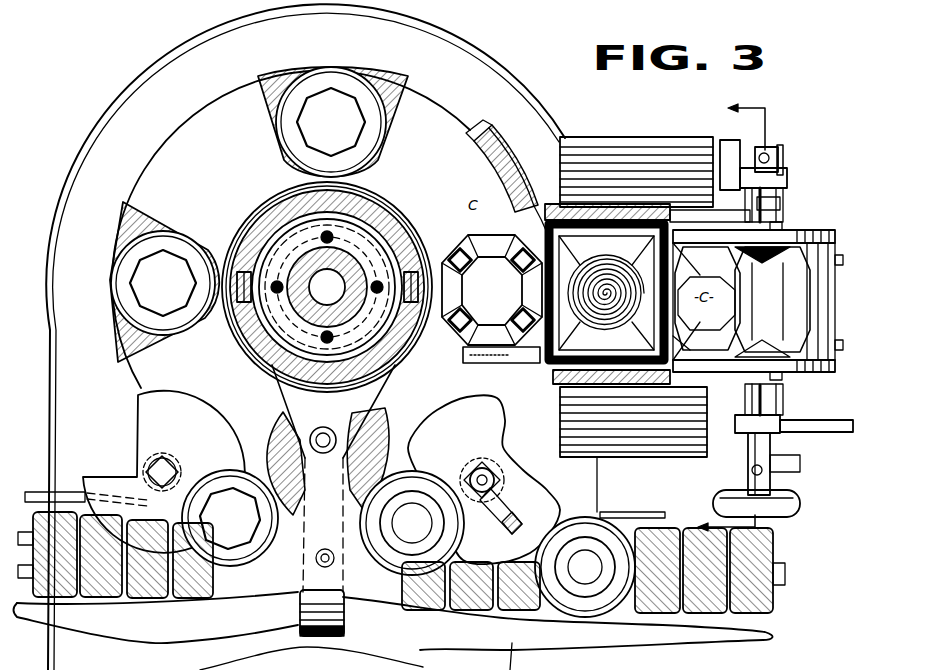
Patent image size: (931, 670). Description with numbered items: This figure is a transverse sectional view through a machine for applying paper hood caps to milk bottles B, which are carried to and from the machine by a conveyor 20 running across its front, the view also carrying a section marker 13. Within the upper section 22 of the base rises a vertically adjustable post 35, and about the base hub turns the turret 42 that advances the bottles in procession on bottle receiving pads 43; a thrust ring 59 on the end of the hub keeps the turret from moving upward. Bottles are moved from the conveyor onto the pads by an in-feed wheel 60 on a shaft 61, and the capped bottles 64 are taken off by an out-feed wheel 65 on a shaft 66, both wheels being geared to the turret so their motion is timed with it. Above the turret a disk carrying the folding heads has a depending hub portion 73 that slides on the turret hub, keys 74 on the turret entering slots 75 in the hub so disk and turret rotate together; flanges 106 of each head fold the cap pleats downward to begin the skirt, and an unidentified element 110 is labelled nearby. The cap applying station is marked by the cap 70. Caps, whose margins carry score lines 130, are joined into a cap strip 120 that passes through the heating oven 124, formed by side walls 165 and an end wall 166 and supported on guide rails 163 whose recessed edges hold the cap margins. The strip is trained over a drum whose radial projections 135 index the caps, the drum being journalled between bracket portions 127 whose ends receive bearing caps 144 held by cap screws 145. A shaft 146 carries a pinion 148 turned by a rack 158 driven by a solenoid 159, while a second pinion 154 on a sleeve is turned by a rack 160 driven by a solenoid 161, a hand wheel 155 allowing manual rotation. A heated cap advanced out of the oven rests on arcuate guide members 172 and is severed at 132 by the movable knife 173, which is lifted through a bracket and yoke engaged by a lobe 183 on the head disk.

The section line 13- 13 is at (720, 317).
The conveyor 20 is at (765, 556).
The upper section 22 is at (70, 408).
The post 35 is at (320, 262).
The turret 42 is at (443, 122).
The bottle receiving pads 43 is at (372, 78).
The thrust ring 59 is at (349, 352).
The in-feed wheel 60 is at (497, 442).
The shaft 61 is at (500, 474).
The capped bottles 64 is at (186, 518).
The out-feed wheel 65 is at (205, 424).
The shaft 66 is at (176, 466).
The cap 70 is at (492, 290).
The hub portion 73 is at (315, 352).
The keys 74 is at (418, 326).
The slots 75 is at (246, 312).
The flanges 106 is at (468, 246).
The hairspring 110 is at (606, 292).
The cap strip 120 is at (832, 312).
The cap heating oven 124 is at (676, 347).
The bracket continuation 127 is at (712, 216).
The score lines 130 is at (684, 256).
The severing point 132 is at (772, 302).
The radial projections 135 is at (780, 232).
The bearing caps 144 is at (787, 184).
The cap screws 145 is at (786, 198).
The shaft 146 is at (766, 150).
The pinion 148 is at (783, 158).
The pinion 154 is at (745, 446).
The hand wheel 155 is at (801, 504).
The rack 158 is at (742, 162).
The solenoid 159 is at (615, 142).
The rack 160 is at (840, 432).
The solenoid 161 is at (686, 458).
The guide rails 163 is at (836, 240).
The side walls 165 is at (616, 208).
The end wall 166 is at (680, 332).
The arcuate guide members 172 is at (480, 160).
The knife 173 is at (502, 356).
The lobe 183 is at (393, 631).
The milk bottles B is at (600, 524).